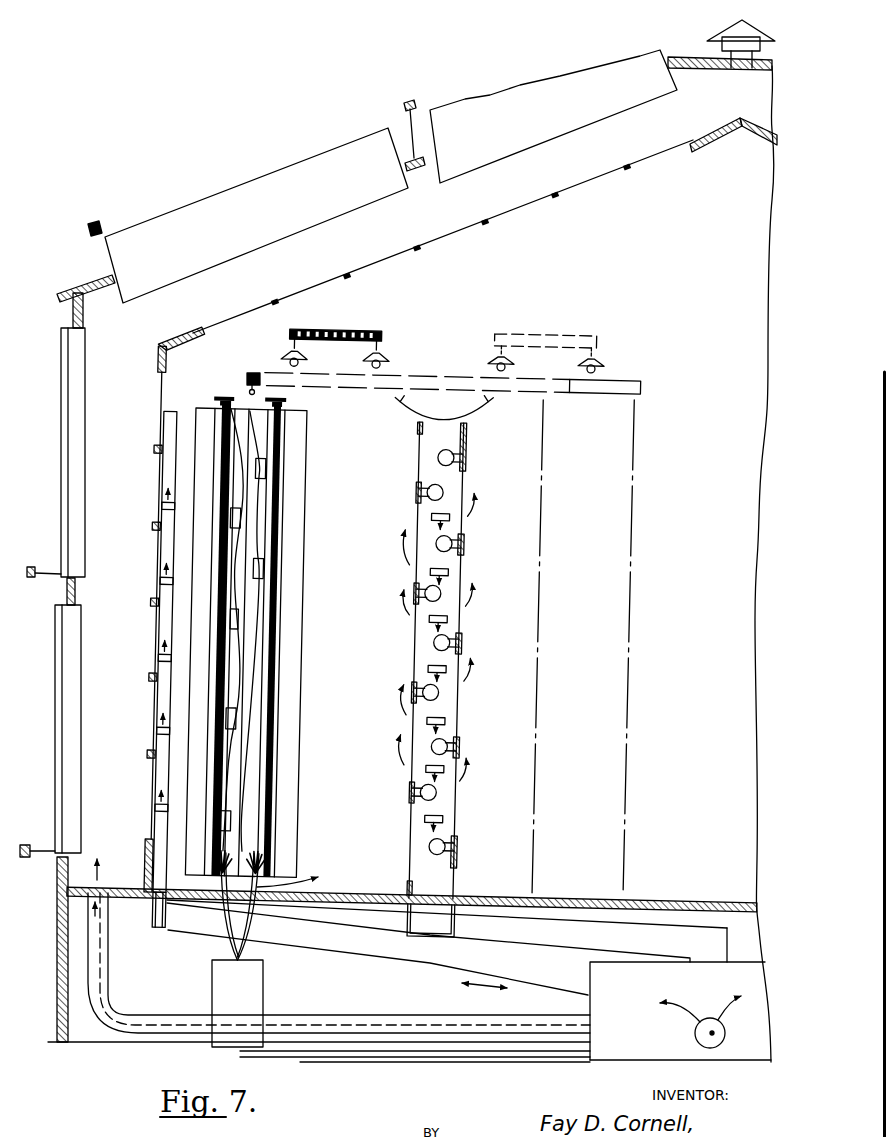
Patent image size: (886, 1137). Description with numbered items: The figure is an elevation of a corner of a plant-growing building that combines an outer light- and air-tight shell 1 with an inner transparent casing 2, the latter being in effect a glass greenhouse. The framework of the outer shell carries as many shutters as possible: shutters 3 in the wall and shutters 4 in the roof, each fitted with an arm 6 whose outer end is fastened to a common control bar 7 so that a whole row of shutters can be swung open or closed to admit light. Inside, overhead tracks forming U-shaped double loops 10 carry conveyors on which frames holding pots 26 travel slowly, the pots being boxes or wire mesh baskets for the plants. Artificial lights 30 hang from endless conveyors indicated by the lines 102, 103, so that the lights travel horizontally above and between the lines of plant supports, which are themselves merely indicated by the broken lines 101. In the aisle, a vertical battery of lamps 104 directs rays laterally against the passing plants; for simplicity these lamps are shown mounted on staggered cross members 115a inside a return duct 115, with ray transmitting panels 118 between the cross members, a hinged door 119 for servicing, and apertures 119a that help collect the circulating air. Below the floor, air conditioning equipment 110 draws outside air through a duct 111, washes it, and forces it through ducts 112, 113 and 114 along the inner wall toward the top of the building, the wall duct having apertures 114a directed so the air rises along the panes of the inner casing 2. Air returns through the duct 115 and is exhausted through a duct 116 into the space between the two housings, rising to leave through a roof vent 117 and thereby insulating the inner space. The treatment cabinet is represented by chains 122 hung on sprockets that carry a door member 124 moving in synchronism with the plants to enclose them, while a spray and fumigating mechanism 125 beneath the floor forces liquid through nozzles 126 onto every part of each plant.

The outer shell 1 is at (62, 295).
The inner transparent casing 2 is at (157, 369).
The wall shutter 3 is at (63, 490).
The roof shutter 4 is at (177, 217).
The arm 6 is at (44, 579).
The control bar 7 is at (31, 567).
The double loop track 10 is at (252, 372).
The pot 26 is at (248, 405).
The artificial light 30 is at (381, 354).
The broken line indicating conveyors and plant supports 101 is at (542, 579).
The endless light conveyor 102 is at (346, 331).
The endless light conveyor 103 is at (573, 338).
The lamp battery 104 is at (462, 622).
The air conditioning and circulating equipment 110 is at (630, 1057).
The air intake duct 111 is at (712, 1046).
The air supply duct 112 is at (384, 960).
The air supply duct 113 is at (148, 921).
The wall duct 114 is at (160, 703).
The wall duct aperture 114a is at (160, 588).
The return duct 115 is at (455, 858).
The cross member 115a is at (420, 494).
The exhaust duct 116 is at (108, 975).
The roof vent 117 is at (758, 45).
The ray transmitting panel 118 is at (417, 568).
The door 119 is at (453, 713).
The column aperture 119a is at (449, 669).
The chain 122 is at (223, 418).
The door member 124 is at (299, 473).
The spray mechanism 125 is at (253, 995).
The nozzle 126 is at (278, 906).